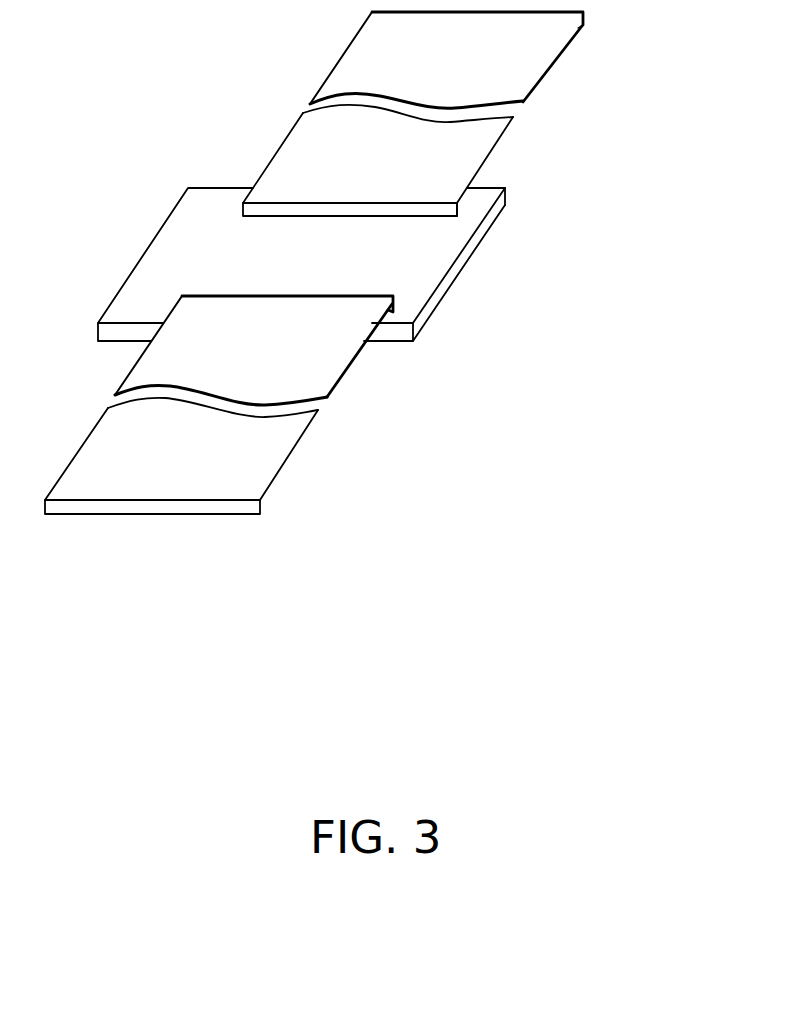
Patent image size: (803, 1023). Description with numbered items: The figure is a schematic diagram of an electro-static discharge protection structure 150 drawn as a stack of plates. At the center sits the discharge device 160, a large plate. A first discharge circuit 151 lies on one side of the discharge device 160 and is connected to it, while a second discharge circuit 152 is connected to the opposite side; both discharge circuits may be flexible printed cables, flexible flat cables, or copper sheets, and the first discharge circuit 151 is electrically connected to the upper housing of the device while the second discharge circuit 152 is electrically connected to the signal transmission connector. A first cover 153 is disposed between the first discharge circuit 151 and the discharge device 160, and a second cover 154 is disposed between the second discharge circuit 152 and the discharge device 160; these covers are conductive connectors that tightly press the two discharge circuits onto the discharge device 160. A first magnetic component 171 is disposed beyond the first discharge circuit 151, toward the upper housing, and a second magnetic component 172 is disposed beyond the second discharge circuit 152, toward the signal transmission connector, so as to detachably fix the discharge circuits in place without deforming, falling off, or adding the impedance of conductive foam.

The electro-static discharge protection structure 150 is at (578, 482).
The first discharge circuit 151 is at (480, 132).
The second discharge circuit 152 is at (320, 370).
The first cover 153 is at (457, 210).
The second cover 154 is at (393, 303).
The discharge device 160 is at (490, 258).
The first magnetic component 171 is at (578, 28).
The second magnetic component 172 is at (262, 507).